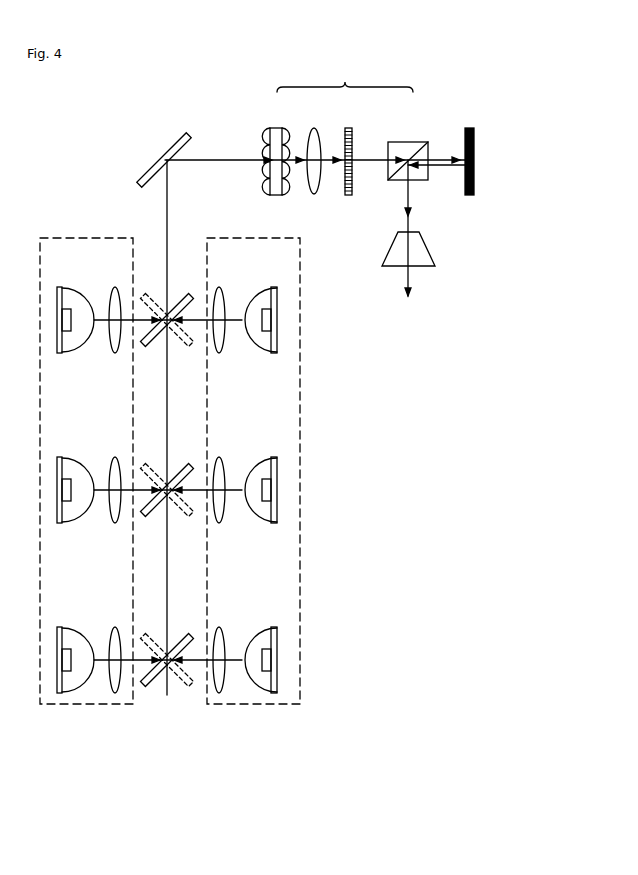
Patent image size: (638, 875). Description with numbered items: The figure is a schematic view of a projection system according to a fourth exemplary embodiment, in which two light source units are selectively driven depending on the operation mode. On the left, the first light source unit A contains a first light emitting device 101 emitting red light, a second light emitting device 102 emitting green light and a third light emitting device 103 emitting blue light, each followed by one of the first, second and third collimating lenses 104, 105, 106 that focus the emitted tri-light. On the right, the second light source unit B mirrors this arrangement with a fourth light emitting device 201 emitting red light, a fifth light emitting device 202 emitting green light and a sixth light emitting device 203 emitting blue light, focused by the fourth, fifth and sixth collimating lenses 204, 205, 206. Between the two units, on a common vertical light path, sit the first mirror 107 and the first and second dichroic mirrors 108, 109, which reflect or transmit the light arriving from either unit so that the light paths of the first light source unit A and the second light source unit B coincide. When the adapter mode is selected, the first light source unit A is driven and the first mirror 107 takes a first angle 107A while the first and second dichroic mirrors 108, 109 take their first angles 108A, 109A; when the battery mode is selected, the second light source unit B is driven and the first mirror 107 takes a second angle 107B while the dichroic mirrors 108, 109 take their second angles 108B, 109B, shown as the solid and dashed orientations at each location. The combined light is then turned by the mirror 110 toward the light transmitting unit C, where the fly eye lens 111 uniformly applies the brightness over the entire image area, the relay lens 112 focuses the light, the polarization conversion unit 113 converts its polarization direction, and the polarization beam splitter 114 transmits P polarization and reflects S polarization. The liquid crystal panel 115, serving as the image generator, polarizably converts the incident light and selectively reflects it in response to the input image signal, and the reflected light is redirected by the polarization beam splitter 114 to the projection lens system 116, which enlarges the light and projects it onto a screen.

The first light emitting device 101 is at (77, 290).
The second light emitting device 102 is at (77, 460).
The third light emitting device 103 is at (77, 630).
The first collimating lens 104 is at (116, 287).
The second collimating lens 105 is at (116, 457).
The third collimating lens 106 is at (116, 627).
The first mirror 107 is at (171, 693).
The first angle 107A is at (147, 684).
The second angle 107B is at (147, 728).
The first dichroic mirror 108 is at (193, 525).
The first angle 108A is at (147, 514).
The second angle 108B is at (186, 512).
The second dichroic mirror 109 is at (193, 355).
The second angle 109A is at (147, 344).
The second angle 109B is at (186, 342).
The relay lens 110 is at (150, 157).
The fly eye lens 111 is at (276, 128).
The relay lens 112 is at (314, 128).
The polarization conversion unit 113 is at (349, 128).
The polarization beam splitter 114 is at (400, 142).
The liquid crystal panel 115 is at (469, 128).
The projection lens system 116 is at (430, 237).
The fourth light emitting device 201 is at (262, 289).
The fifth light emitting device 202 is at (262, 459).
The sixth light emitting device 203 is at (262, 629).
The fourth collimating lens 204 is at (218, 287).
The fifth collimating lens 205 is at (218, 457).
The sixth collimating lens 206 is at (218, 627).
The first light source unit A is at (86, 471).
The second light source unit B is at (253, 471).
The light transmitting unit C is at (345, 79).